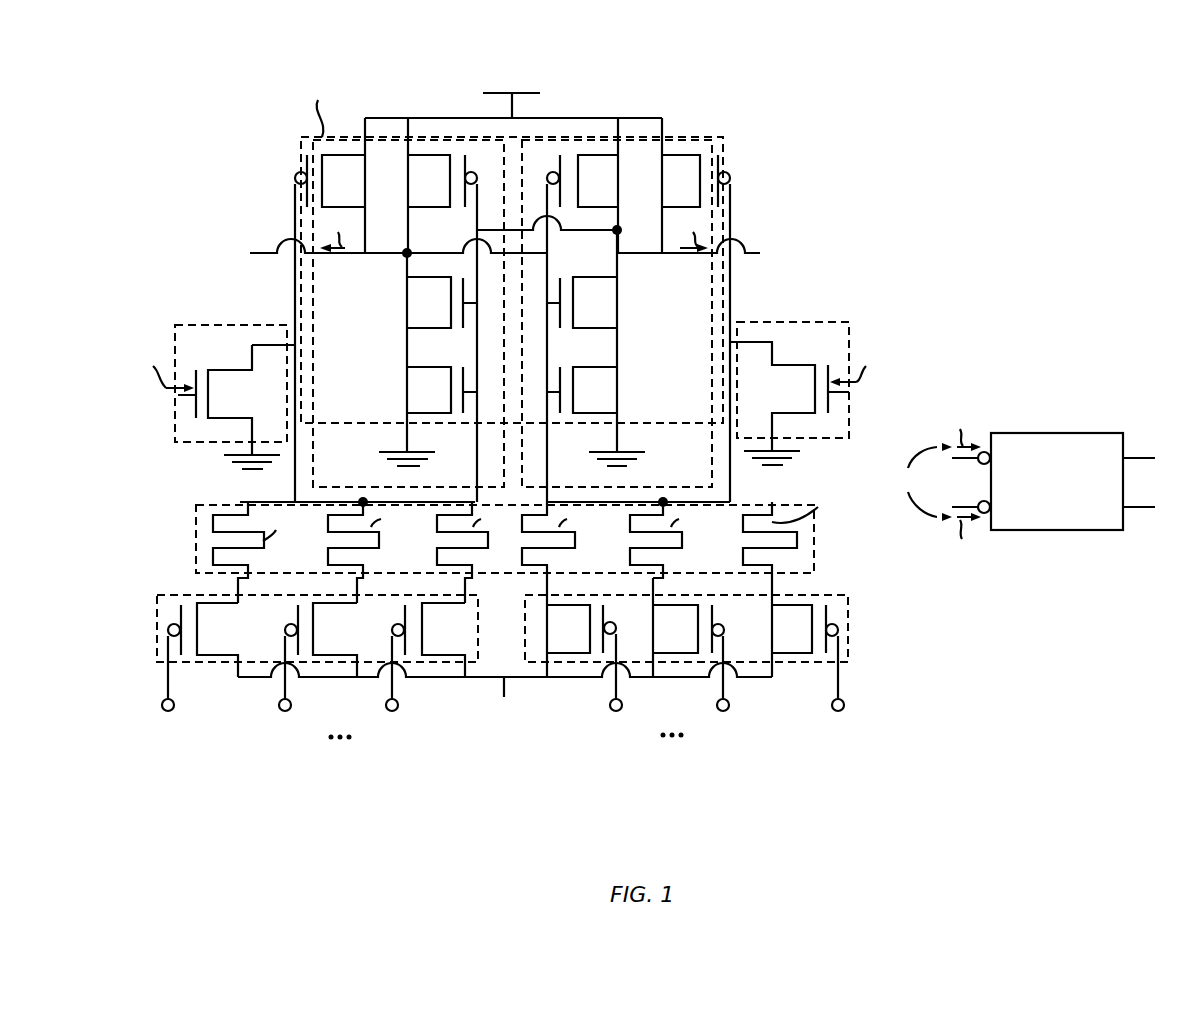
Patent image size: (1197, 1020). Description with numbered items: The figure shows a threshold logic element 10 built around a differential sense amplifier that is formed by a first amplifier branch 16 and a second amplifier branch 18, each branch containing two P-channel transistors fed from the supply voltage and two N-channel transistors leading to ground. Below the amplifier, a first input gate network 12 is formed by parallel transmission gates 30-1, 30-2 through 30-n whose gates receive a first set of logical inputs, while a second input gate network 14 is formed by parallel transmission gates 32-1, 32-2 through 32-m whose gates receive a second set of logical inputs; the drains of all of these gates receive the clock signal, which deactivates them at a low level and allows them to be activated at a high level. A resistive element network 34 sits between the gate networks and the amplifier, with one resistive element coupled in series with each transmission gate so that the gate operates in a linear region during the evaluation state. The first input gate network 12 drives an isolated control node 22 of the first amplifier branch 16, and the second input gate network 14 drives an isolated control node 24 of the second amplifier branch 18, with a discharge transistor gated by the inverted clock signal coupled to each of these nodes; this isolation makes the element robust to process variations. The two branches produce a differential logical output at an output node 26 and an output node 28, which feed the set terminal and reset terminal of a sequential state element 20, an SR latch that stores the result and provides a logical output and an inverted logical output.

The threshold logic element 10 is at (275, 85).
The first input gate network 12 is at (157, 612).
The second input gate network 14 is at (848, 612).
The first amplifier branch 16 is at (499, 166).
The second amplifier branch 18 is at (544, 167).
The sequential state element 20 is at (1072, 489).
The isolated control node 22 is at (361, 497).
The isolated control node 24 is at (666, 497).
The output node 26 is at (404, 257).
The output node 28 is at (620, 229).
The transmission gate 30-1 is at (206, 631).
The transmission gate 30-2 is at (323, 631).
The transmission gate 30-n is at (426, 631).
The transmission gate 32-m is at (604, 629).
The transmission gate 32-2 is at (713, 629).
The transmission gate 32-1 is at (793, 606).
The resistive element network 34 is at (197, 528).